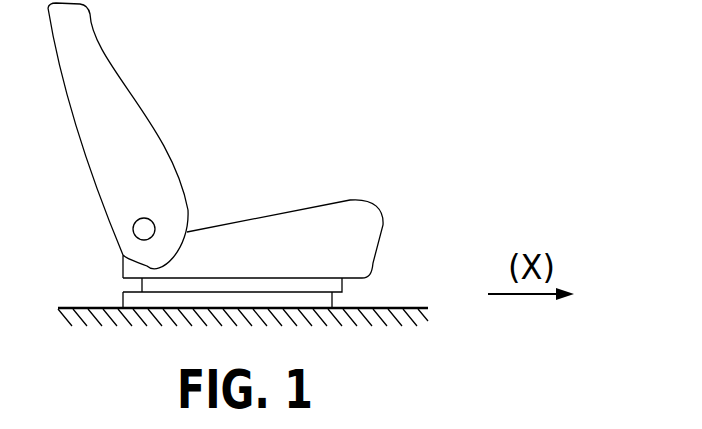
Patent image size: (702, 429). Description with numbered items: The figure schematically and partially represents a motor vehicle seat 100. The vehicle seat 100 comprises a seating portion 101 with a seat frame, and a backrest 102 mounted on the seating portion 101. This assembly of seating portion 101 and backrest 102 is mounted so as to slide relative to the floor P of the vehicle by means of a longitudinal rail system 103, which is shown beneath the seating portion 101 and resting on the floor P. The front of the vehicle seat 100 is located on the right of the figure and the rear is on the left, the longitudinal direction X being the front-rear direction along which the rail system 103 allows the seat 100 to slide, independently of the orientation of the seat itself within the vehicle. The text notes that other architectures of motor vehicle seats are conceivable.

The vehicle seat 100 is at (265, 155).
The seating portion 101 is at (305, 220).
The backrest 102 is at (92, 62).
The longitudinal rail system 103 is at (360, 292).
The floor P is at (85, 308).